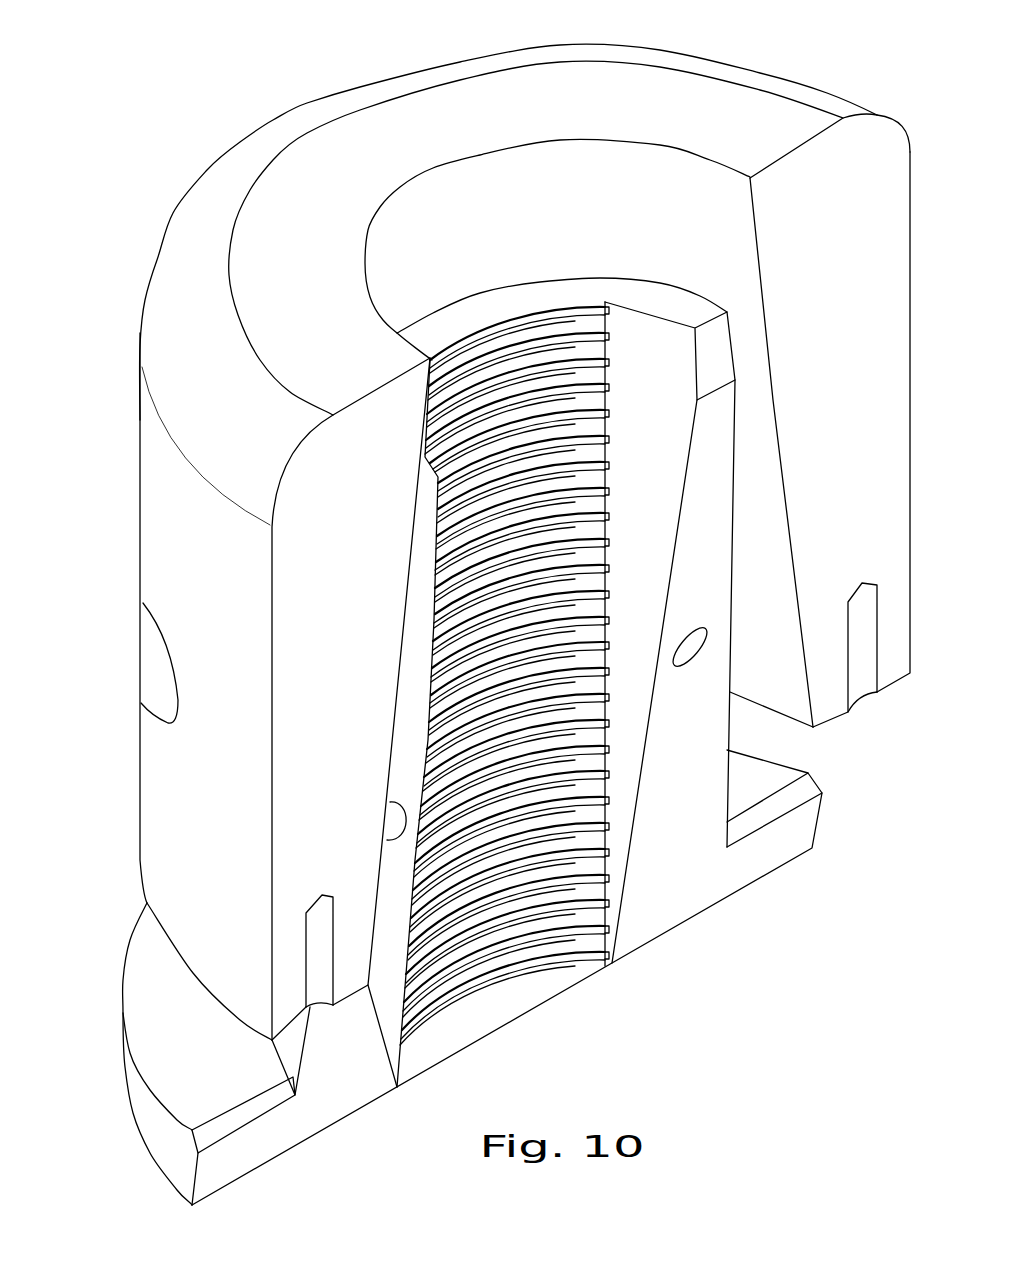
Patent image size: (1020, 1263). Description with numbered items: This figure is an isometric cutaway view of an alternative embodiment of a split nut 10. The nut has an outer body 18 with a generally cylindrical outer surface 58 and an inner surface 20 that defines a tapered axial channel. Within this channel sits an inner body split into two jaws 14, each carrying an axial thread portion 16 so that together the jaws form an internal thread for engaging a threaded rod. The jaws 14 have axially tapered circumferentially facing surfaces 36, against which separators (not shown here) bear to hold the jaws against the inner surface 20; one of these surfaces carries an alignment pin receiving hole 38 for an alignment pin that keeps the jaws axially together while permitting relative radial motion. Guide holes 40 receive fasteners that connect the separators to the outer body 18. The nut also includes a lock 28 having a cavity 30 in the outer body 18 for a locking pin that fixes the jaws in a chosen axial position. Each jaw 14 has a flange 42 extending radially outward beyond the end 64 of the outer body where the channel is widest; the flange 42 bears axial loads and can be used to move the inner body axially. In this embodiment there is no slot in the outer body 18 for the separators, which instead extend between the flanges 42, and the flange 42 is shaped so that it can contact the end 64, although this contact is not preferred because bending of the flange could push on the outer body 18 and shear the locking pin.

The split nut 10 is at (864, 86).
The jaws 14 is at (687, 887).
The axial thread portion 16 is at (527, 945).
The outer body 18 is at (873, 473).
The inner surface 20 is at (563, 231).
The lock 28 is at (108, 663).
The cavity 30 is at (157, 663).
The axially tapered circumferentially facing surfaces 36 is at (700, 819).
The alignment pin receiving hole 38 is at (690, 647).
The guide holes 40 is at (858, 677).
The flange 42 is at (148, 983).
The outer surface 58 is at (180, 829).
The end 64 is at (147, 903).